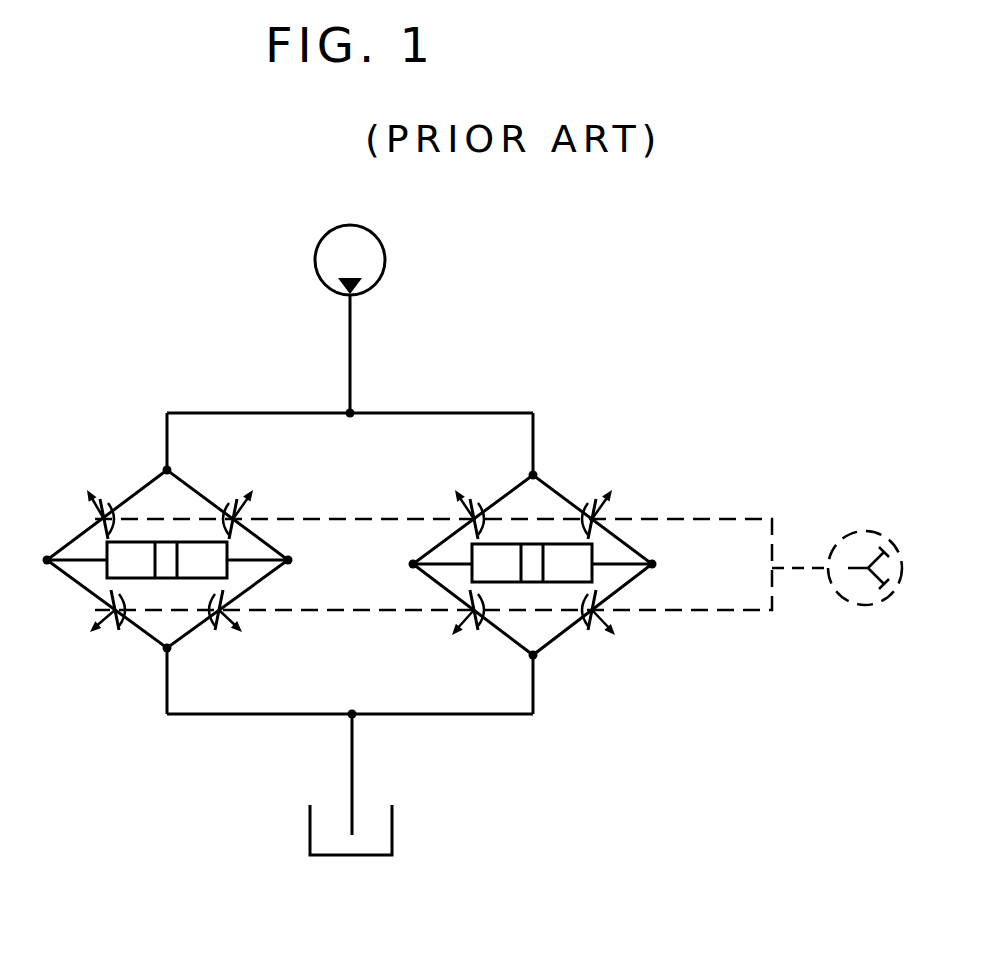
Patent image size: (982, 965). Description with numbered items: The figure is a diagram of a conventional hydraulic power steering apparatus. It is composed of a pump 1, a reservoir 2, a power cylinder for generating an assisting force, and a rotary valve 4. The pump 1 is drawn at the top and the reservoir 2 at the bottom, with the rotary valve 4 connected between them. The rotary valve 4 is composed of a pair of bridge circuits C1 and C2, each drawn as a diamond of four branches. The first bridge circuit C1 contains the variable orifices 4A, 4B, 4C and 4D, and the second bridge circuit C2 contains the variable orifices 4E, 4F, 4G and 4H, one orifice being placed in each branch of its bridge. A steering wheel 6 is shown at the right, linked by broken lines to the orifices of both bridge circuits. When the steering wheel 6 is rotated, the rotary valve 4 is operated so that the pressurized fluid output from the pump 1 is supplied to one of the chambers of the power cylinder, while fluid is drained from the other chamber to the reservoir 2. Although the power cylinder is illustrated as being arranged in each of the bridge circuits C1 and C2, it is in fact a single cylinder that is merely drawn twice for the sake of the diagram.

The pump 1 is at (385, 262).
The reservoir 2 is at (358, 855).
The rotary valve 4 is at (440, 392).
The variable orifice 4A is at (86, 498).
The variable orifice 4B is at (250, 498).
The variable orifice 4C is at (95, 629).
The variable orifice 4D is at (246, 629).
The variable orifice 4E is at (451, 500).
The variable orifice 4F is at (607, 500).
The variable orifice 4G is at (457, 630).
The variable orifice 4H is at (615, 632).
The steering wheel 6 is at (868, 530).
The bridge circuit C1 is at (130, 462).
The bridge circuit C2 is at (568, 460).